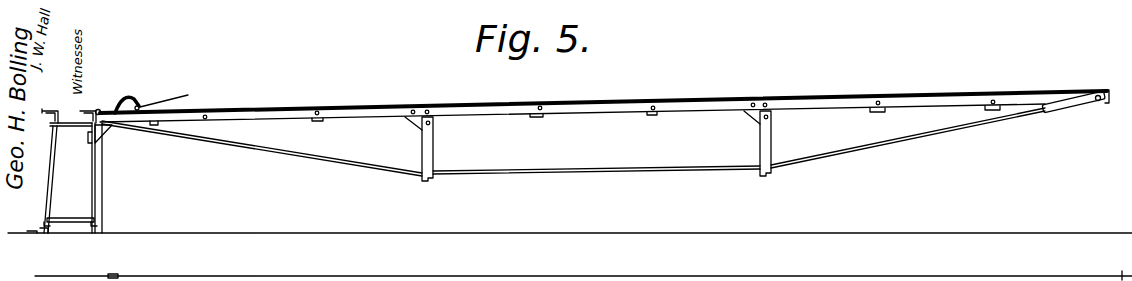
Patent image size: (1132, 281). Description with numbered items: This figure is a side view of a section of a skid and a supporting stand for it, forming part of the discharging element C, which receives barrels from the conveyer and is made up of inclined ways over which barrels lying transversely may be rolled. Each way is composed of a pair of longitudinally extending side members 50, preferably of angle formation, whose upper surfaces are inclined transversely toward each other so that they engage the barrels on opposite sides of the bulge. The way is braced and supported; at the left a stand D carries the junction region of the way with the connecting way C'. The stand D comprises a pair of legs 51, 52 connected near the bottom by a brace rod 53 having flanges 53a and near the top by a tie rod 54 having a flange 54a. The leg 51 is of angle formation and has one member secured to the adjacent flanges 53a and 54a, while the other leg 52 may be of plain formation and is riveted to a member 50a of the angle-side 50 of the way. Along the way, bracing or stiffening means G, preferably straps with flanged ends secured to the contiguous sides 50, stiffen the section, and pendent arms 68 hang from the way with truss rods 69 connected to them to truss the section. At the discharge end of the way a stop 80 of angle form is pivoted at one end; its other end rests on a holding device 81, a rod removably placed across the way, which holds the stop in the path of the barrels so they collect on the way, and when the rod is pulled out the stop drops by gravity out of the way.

The side members 50 is at (50, 109).
The member of the angle-side 50a is at (484, 114).
The leg 51 is at (101, 195).
The leg 52 is at (50, 197).
The brace rod 53 is at (70, 210).
The flanges 53a is at (47, 223).
The tie rod 54 is at (68, 127).
The flange 54a is at (106, 140).
The pendent arms 68 is at (427, 155).
The truss rods 69 is at (553, 167).
The stop 80 is at (132, 98).
The holding device 81 is at (178, 95).
The discharging element C is at (897, 88).
The second way C' is at (69, 104).
The stand D is at (68, 184).
The bracing or stiffening means G is at (657, 127).